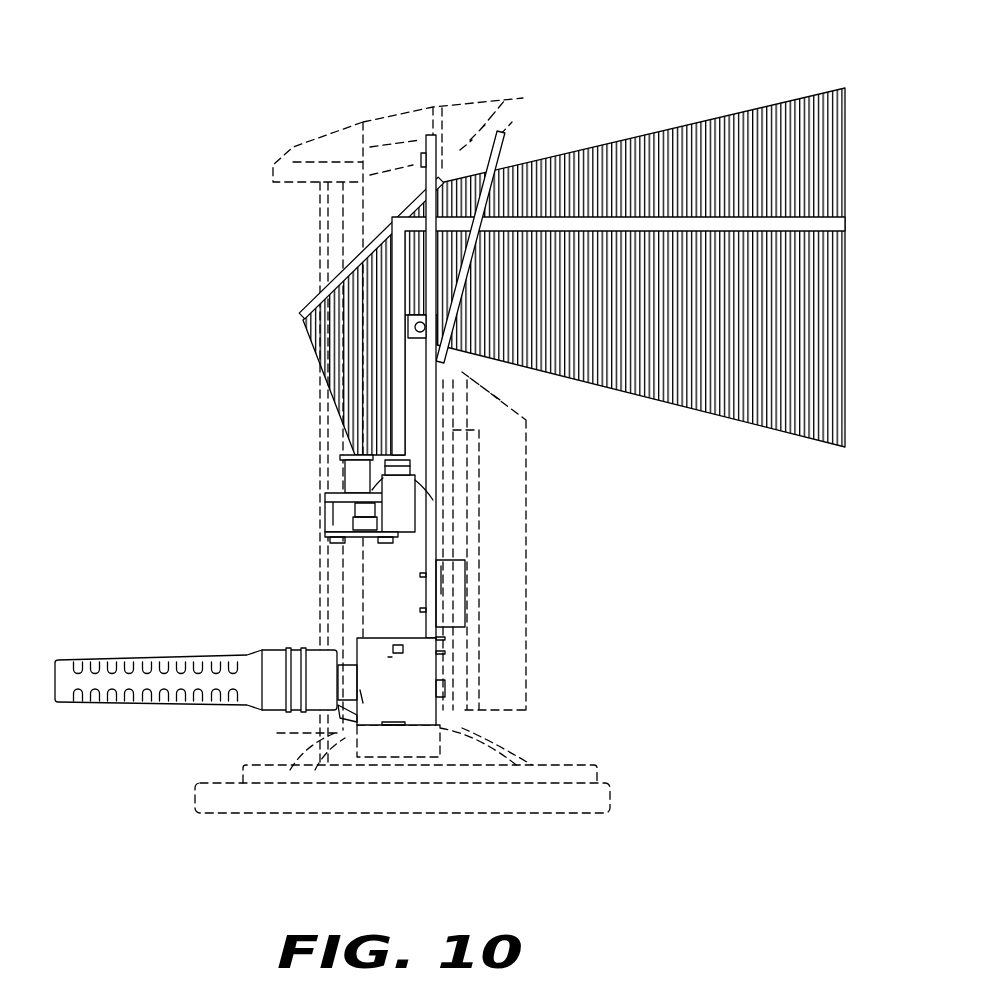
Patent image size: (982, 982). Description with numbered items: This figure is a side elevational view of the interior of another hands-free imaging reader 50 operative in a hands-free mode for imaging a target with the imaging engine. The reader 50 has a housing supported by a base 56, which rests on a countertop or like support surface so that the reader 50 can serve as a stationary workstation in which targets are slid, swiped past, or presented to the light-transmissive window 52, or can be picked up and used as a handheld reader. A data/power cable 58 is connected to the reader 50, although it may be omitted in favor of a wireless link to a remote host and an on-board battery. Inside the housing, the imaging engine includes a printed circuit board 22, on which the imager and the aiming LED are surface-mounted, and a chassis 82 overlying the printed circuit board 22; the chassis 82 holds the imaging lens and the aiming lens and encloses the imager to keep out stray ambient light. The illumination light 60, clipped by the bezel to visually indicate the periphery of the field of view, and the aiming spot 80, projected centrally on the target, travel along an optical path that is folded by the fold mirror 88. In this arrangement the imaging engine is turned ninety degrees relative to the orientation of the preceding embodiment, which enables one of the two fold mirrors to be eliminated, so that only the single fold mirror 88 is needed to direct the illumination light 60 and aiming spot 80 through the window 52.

The aiming light distribution 60 is at (852, 93).
The aiming pattern or spot 80 is at (853, 227).
The light-transmissive window 52 is at (505, 153).
The fold mirror 88 is at (317, 297).
The hands-free imaging reader 50 is at (277, 377).
The chassis 82 is at (323, 508).
The printed circuit board 22 is at (330, 535).
The data/power cable 58 is at (122, 657).
The base 56 is at (195, 790).